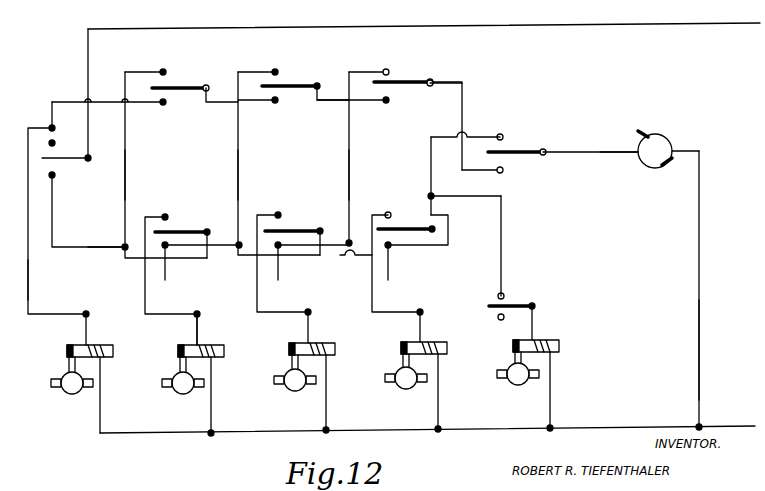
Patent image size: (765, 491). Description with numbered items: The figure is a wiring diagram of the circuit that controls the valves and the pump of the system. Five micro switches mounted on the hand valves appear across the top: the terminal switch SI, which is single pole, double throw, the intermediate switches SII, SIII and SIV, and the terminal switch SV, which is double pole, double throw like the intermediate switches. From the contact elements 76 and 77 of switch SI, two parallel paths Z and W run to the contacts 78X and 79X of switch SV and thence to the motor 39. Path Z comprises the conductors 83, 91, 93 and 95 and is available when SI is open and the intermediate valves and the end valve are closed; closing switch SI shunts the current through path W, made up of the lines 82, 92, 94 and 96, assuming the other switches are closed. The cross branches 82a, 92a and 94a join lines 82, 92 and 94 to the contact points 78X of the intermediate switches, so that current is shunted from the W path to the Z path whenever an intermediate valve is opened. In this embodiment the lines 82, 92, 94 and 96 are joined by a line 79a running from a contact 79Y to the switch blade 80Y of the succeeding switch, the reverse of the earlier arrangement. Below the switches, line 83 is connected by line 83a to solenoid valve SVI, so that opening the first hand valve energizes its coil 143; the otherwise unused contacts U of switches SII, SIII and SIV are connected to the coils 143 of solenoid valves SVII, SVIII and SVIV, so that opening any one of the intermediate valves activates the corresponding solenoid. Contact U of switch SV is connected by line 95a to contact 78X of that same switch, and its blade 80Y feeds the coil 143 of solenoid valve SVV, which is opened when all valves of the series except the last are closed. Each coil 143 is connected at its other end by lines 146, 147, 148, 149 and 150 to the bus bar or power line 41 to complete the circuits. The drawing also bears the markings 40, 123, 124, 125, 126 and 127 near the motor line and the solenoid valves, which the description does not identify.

The terminal switch SI is at (58, 97).
The contact element 77 is at (70, 136).
The contact element 76 is at (52, 175).
The cross branch 82a is at (125, 178).
The line 82 is at (88, 249).
The line 83a is at (28, 283).
The conductor 83 is at (140, 103).
The contact 78X is at (163, 70).
The intermediate switch SII is at (191, 55).
The intermediate switch SIII is at (306, 48).
The intermediate switch SIV is at (415, 45).
The terminal switch SV is at (532, 100).
The conductor 91 is at (252, 101).
The conductor 93 is at (363, 101).
The cross branch 92a is at (238, 178).
The cross branch 94a is at (349, 178).
The path Z is at (329, 97).
The conductor 95 is at (464, 95).
The contact 79X is at (502, 173).
The conductor 40 is at (612, 152).
The motor 39 is at (658, 134).
The bus bar 41 is at (699, 362).
The contact U is at (165, 217).
The switch blade 80Y is at (180, 228).
The line 92 is at (168, 255).
The line 94 is at (280, 255).
The line 96 is at (392, 255).
The contact 79Y is at (329, 303).
The line 79a is at (228, 246).
The path W is at (348, 253).
The line 95a is at (503, 245).
The coil 143 is at (99, 345).
The motor 123 is at (60, 390).
The motor 124 is at (172, 390).
The motor 125 is at (284, 387).
The motor 126 is at (396, 385).
The motor 127 is at (516, 381).
The line 146 is at (100, 390).
The line 147 is at (211, 390).
The line 148 is at (326, 388).
The line 149 is at (438, 385).
The line 150 is at (550, 381).
The solenoid valve SVI is at (82, 394).
The solenoid valve SVII is at (193, 394).
The solenoid valve SVIII is at (305, 391).
The solenoid valve SVIV is at (416, 389).
The solenoid valve SVV is at (528, 385).